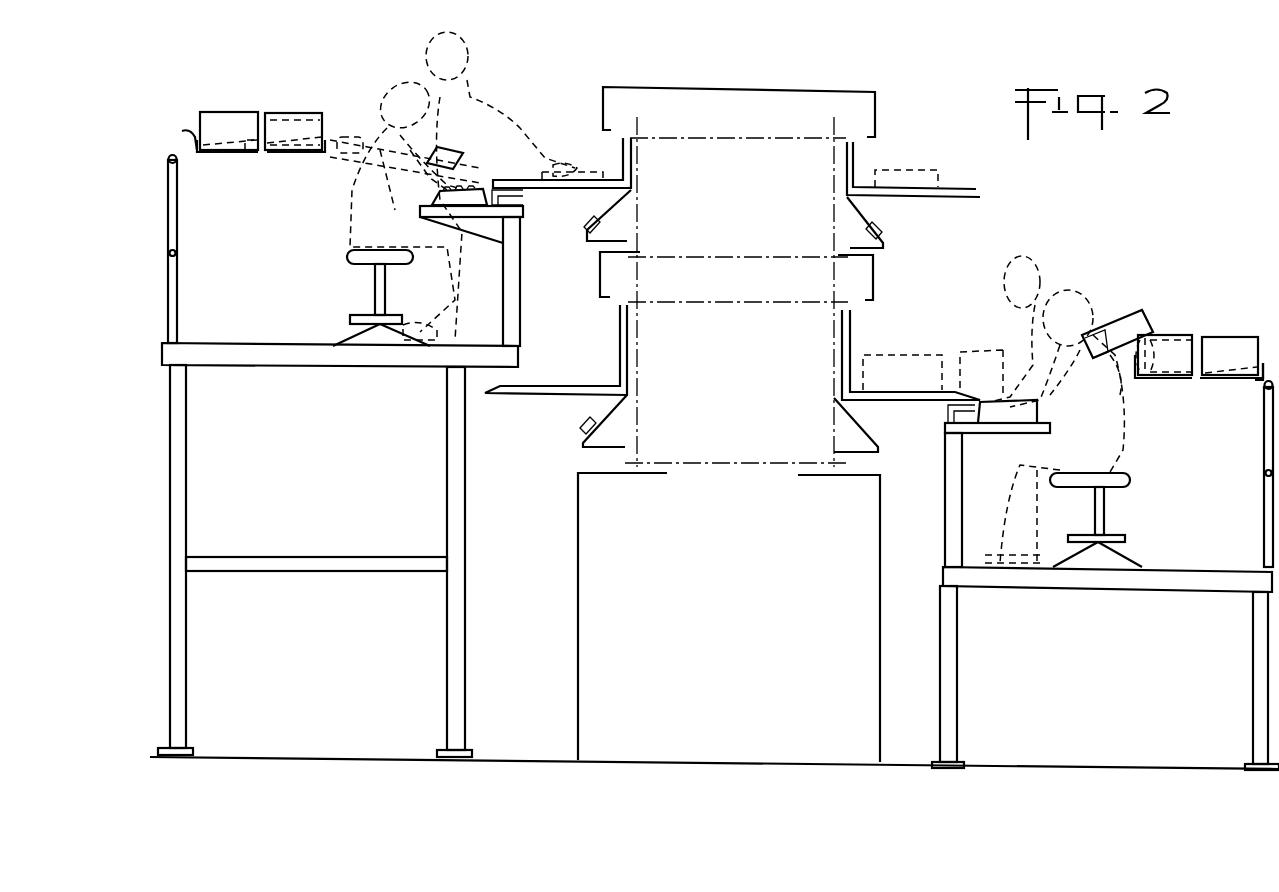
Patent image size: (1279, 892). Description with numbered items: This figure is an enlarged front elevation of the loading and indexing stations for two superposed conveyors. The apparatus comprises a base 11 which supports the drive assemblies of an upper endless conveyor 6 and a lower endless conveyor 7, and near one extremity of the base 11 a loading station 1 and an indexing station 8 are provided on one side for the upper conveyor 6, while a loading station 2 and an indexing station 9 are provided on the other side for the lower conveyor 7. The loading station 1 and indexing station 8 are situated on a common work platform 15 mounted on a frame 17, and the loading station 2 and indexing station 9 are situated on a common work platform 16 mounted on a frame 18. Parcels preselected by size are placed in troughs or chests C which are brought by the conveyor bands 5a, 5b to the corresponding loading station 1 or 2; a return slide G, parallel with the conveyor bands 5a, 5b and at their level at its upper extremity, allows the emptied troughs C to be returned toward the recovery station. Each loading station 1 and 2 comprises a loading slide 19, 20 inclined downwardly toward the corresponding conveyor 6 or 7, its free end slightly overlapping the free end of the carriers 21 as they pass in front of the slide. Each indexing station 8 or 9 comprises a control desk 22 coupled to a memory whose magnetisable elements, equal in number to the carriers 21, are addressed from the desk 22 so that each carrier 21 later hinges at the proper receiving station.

The loading station 1 is at (353, 124).
The loading station 2 is at (1116, 311).
The conveyor band 5a is at (283, 155).
The conveyor band 5b is at (1170, 382).
The upper endless conveyor 6 is at (889, 146).
The lower endless conveyor 7 is at (878, 342).
The indexing station 8 is at (529, 231).
The indexing station 9 is at (933, 441).
The base 11 is at (575, 643).
The work platform 15 is at (254, 354).
The work platform 16 is at (1190, 568).
The frame 17 is at (178, 496).
The frame 18 is at (958, 654).
The loading slide 19 is at (364, 166).
The loading slide 20 is at (1118, 392).
The carriers 21 is at (539, 392).
The control desk 22 is at (477, 192).
The troughs or chests C is at (278, 120).
The return slide G is at (190, 146).